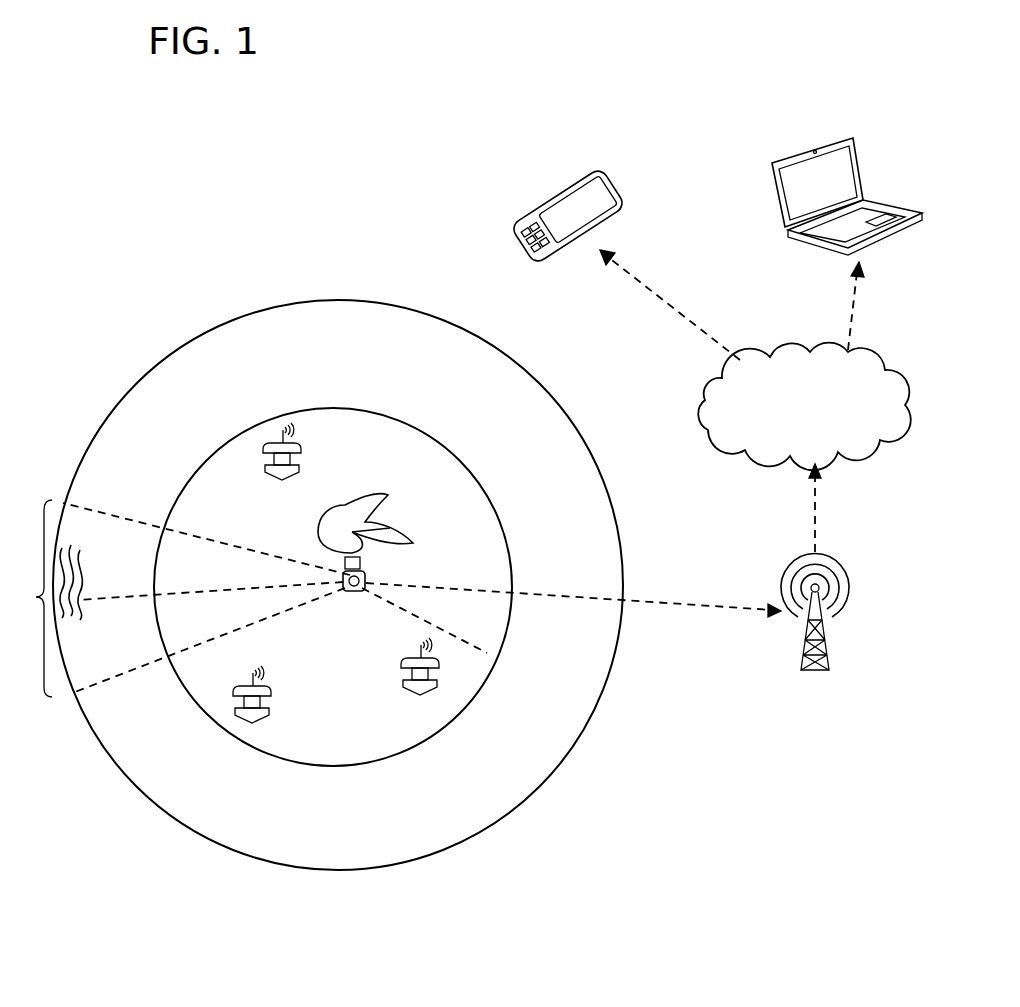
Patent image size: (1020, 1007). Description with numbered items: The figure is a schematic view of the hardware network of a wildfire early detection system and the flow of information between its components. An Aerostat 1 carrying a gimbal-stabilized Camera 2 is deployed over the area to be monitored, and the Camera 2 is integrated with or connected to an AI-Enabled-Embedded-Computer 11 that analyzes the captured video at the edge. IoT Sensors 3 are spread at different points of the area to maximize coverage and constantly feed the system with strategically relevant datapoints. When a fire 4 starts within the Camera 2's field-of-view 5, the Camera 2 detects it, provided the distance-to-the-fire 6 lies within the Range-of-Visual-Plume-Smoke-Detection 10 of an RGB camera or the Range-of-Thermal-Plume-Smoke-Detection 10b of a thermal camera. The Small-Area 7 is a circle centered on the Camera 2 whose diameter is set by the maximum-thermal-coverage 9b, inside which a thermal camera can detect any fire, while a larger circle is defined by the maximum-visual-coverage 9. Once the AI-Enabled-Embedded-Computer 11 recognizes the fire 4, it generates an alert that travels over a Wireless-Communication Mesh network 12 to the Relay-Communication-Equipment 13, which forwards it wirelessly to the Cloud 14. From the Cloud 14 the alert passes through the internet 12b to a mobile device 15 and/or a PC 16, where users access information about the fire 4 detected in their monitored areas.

The Aerostat 1 is at (335, 505).
The Camera 2 is at (355, 592).
The IoT Sensors 3 is at (265, 470).
The fire 4 is at (83, 560).
The field-of-view 5 is at (33, 598).
The distance-to-the-fire 6 is at (206, 574).
The Small-Area 7 is at (430, 737).
The maximum-visual-coverage 9 is at (77, 690).
The maximum-thermal-coverage 9b is at (480, 652).
The Range-of-Visual-Plume-Smoke-Detection 10 is at (338, 585).
The Range-of-Thermal-Plume-Smoke-Detection 10b is at (435, 504).
The AI-Enabled-Embedded-Computer 11 is at (360, 562).
The Wireless-Communication Mesh network 12 is at (642, 602).
The internet 12b is at (769, 305).
The Relay-Communication-Equipment 13 is at (815, 637).
The Cloud 14 is at (804, 407).
The mobile device 15 is at (560, 195).
The PC 16 is at (777, 188).